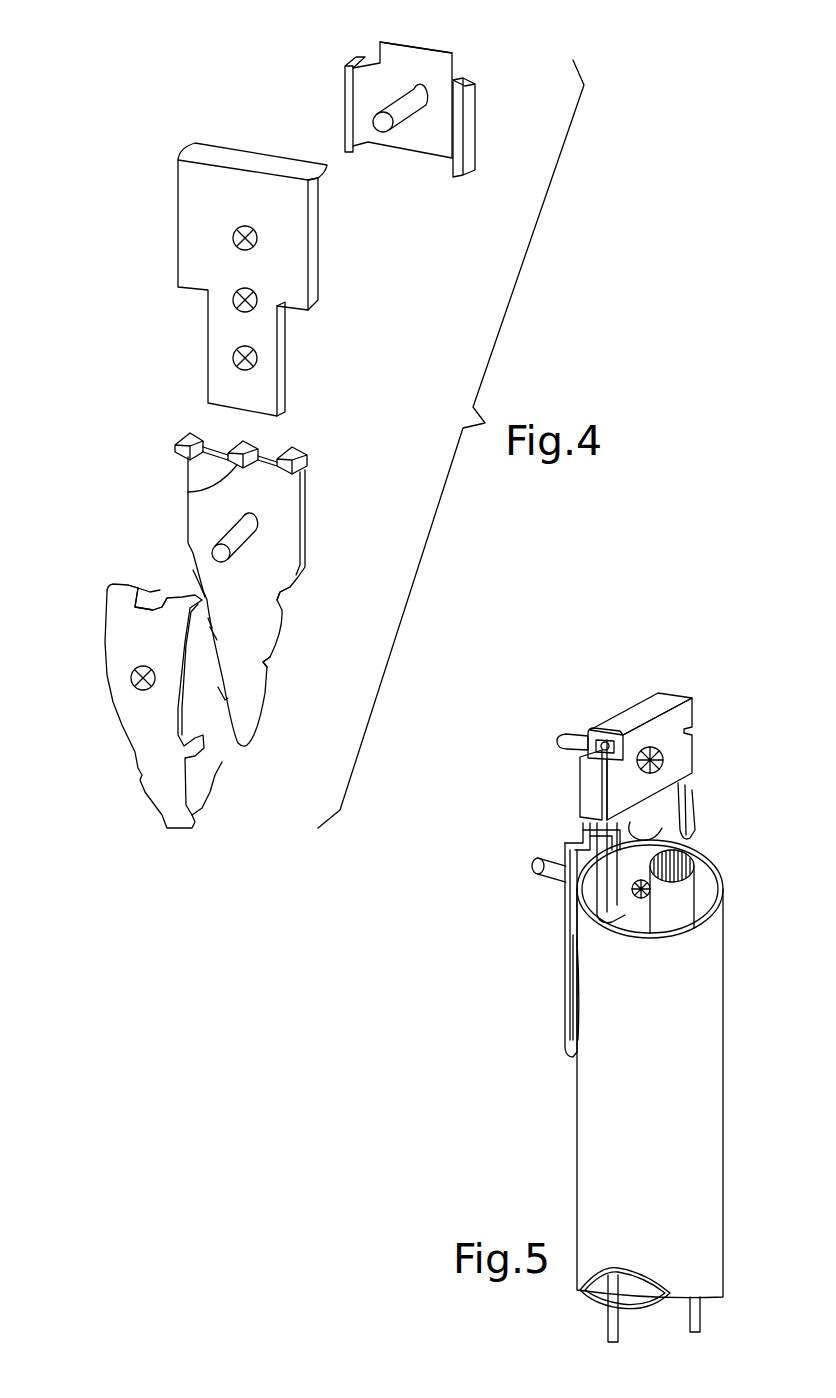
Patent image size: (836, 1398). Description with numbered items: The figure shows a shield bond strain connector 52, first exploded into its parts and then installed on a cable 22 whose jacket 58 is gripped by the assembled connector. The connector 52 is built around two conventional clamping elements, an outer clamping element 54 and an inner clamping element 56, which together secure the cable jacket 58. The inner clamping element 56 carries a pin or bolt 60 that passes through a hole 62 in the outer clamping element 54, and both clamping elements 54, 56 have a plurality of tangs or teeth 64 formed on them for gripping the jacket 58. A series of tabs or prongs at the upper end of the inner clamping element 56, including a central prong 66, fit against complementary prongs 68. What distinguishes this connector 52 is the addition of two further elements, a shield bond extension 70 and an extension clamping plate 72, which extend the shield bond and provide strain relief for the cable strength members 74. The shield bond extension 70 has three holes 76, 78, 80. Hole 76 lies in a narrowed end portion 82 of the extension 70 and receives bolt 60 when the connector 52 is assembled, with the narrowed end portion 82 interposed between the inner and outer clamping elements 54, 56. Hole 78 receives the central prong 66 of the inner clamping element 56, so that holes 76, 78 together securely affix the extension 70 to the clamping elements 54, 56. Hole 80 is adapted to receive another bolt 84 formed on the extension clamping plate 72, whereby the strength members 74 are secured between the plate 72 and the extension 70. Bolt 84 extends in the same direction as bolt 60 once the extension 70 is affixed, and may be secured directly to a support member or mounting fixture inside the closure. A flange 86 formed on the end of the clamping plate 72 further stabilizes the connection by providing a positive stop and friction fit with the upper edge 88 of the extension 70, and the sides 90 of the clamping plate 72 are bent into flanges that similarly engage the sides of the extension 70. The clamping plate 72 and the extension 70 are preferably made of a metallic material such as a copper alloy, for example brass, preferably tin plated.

In FIG. 5, the tubular housing 22 is at (578, 1095).
In FIG. 4, the shield bond strain connector 52 is at (236, 68).
In FIG. 5, the shield bond strain connector 52 is at (545, 712).
In FIG. 4, the outer clamping element 54 is at (118, 733).
In FIG. 5, the outer clamping element 54 is at (560, 925).
In FIG. 4, the inner clamping element 56 is at (270, 715).
In FIG. 5, the inner clamping element 56 is at (690, 840).
In FIG. 5, the cable jacket 58 is at (619, 937).
In FIG. 4, the pin or bolt 60 is at (253, 532).
In FIG. 5, the pin or bolt 60 is at (545, 870).
In FIG. 4, the hole 62 is at (138, 680).
In FIG. 4, the tangs or teeth 64 is at (300, 580).
In FIG. 5, the tangs or teeth 64 is at (570, 995).
In FIG. 4, the central prong 66 is at (188, 490).
In FIG. 4, the complementary prongs 68 is at (185, 598).
In FIG. 4, the shield bond extension 70 is at (313, 255).
In FIG. 5, the shield bond extension 70 is at (617, 713).
In FIG. 4, the extension clamping plate 72 is at (442, 140).
In FIG. 5, the extension clamping plate 72 is at (682, 740).
In FIG. 5, the cable strength members 74 is at (690, 788).
In FIG. 4, the hole 76 is at (236, 363).
In FIG. 4, the hole 78 is at (236, 302).
In FIG. 4, the hole 80 is at (234, 238).
In FIG. 4, the narrowed end portion 82 is at (288, 348).
In FIG. 4, the bolt 84 is at (422, 97).
In FIG. 5, the bolt 84 is at (567, 748).
In FIG. 4, the flange 86 is at (408, 60).
In FIG. 4, the upper edge 88 is at (220, 152).
In FIG. 4, the sides 90 is at (343, 95).